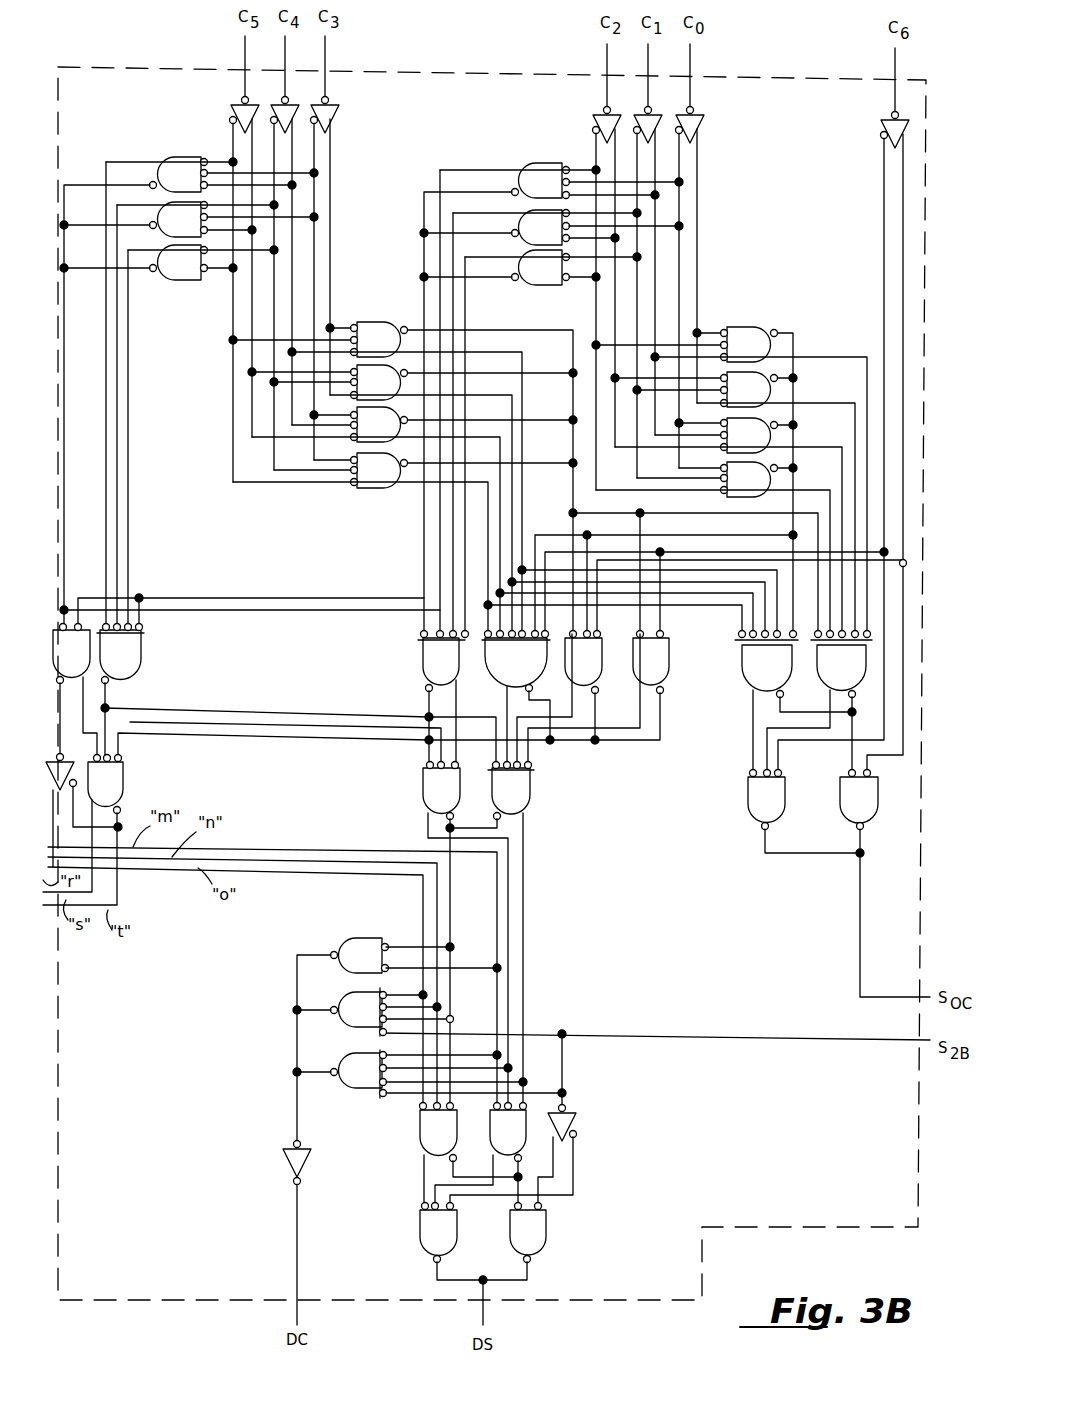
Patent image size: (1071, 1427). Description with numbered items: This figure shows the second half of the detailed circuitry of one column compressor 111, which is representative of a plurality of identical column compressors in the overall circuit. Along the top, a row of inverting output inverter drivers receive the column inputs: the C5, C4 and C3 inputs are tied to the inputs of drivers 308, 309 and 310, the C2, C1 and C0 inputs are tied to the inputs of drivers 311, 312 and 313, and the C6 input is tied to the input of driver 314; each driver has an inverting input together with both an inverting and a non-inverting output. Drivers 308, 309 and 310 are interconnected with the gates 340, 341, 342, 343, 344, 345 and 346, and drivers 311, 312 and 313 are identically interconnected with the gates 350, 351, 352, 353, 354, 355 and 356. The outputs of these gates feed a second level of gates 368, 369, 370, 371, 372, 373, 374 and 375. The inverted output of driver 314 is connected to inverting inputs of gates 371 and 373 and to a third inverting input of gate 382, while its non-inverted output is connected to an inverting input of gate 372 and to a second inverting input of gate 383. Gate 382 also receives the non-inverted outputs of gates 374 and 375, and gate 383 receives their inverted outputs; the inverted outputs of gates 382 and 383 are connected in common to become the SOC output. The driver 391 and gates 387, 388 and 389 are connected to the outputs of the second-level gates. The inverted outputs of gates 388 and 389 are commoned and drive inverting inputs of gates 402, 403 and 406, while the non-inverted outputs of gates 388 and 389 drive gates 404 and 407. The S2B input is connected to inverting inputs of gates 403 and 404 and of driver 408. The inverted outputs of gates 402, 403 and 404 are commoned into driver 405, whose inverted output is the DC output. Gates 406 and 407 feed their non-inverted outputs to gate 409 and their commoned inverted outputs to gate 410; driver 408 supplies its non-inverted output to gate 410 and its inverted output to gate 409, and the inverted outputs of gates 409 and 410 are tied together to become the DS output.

The column compressor 111 is at (920, 1183).
The inverter driver 308 is at (232, 110).
The inverter driver 309 is at (288, 106).
The inverter driver 310 is at (333, 112).
The inverter driver 311 is at (595, 118).
The inverter driver 312 is at (652, 116).
The inverter driver 313 is at (700, 120).
The inverter driver 314 is at (885, 125).
The gate 340 is at (167, 184).
The gate 341 is at (167, 229).
The gate 342 is at (167, 272).
The gate 343 is at (366, 349).
The gate 344 is at (366, 392).
The gate 345 is at (366, 434).
The gate 346 is at (366, 480).
The gate 350 is at (529, 190).
The gate 351 is at (529, 237).
The gate 352 is at (529, 277).
The gate 353 is at (736, 354).
The gate 354 is at (736, 399).
The gate 355 is at (736, 445).
The gate 356 is at (736, 489).
The gate 368 is at (59, 656).
The gate 369 is at (108, 656).
The gate 370 is at (429, 666).
The gate 371 is at (504, 666).
The gate 372 is at (571, 666).
The gate 373 is at (639, 666).
The gate 374 is at (755, 672).
The gate 375 is at (829, 672).
The gate 382 is at (755, 804).
The gate 383 is at (847, 804).
The gate 387 is at (93, 789).
The gate 388 is at (430, 795).
The gate 389 is at (499, 795).
The driver 391 is at (66, 760).
The gate 402 is at (348, 965).
The gate 403 is at (348, 1019).
The gate 404 is at (348, 1080).
The driver 405 is at (282, 1160).
The gate 406 is at (427, 1137).
The gate 407 is at (496, 1137).
The driver 408 is at (576, 1120).
The gate 409 is at (427, 1237).
The gate 410 is at (516, 1237).